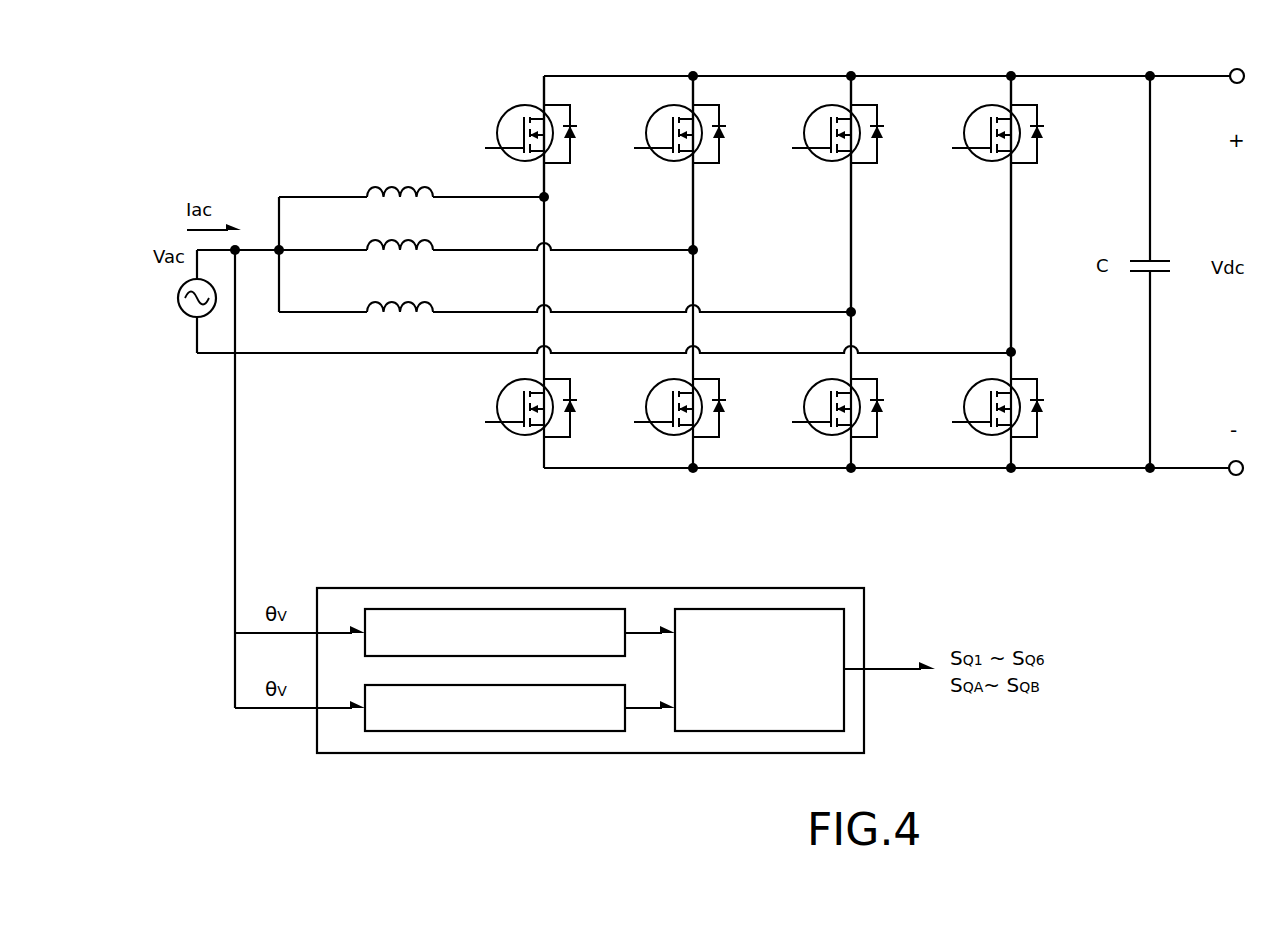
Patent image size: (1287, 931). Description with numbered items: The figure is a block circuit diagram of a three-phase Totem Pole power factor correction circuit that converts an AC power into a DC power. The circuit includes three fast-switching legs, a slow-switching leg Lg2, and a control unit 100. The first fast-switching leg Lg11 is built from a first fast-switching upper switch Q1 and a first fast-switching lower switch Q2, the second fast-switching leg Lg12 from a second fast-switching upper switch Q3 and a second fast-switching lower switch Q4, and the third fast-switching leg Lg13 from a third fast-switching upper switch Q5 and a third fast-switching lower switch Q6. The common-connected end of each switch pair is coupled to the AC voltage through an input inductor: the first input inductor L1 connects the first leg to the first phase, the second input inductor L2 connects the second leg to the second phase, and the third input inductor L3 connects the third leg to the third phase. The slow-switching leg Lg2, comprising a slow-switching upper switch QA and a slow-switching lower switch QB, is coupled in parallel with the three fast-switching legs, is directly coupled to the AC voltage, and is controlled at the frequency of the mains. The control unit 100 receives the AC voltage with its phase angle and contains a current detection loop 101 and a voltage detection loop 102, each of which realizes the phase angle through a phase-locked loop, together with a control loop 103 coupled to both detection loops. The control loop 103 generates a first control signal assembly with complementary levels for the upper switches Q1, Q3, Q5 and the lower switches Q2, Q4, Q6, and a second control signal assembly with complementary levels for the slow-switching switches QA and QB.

The control unit 100 is at (648, 598).
The current detection loop 101 is at (510, 610).
The voltage detection loop 102 is at (510, 735).
The control loop 103 is at (737, 620).
The first fast-switching leg Lg11 is at (544, 88).
The second fast-switching leg Lg12 is at (690, 93).
The third fast-switching leg Lg13 is at (843, 90).
The slow-switching leg Lg2 is at (1007, 90).
The first fast-switching upper switch Q1 is at (517, 134).
The first fast-switching lower switch Q2 is at (517, 408).
The second fast-switching upper switch Q3 is at (666, 134).
The second fast-switching lower switch Q4 is at (666, 408).
The third fast-switching upper switch Q5 is at (824, 134).
The third fast-switching lower switch Q6 is at (824, 408).
The slow-switching upper switch QA is at (984, 134).
The slow-switching lower switch QB is at (984, 408).
The first input inductor L1 is at (400, 182).
The second input inductor L2 is at (400, 235).
The third input inductor L3 is at (400, 297).